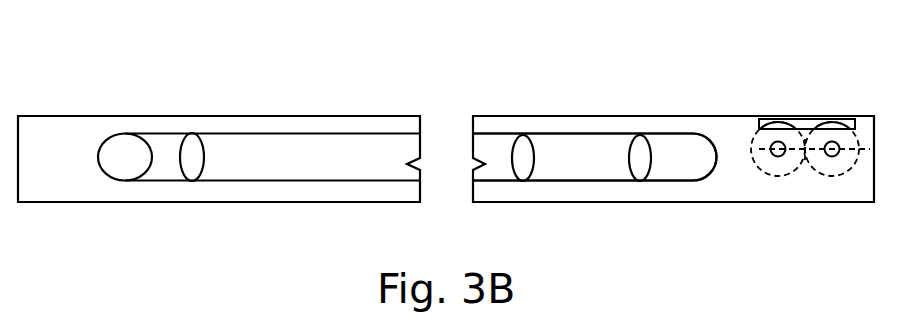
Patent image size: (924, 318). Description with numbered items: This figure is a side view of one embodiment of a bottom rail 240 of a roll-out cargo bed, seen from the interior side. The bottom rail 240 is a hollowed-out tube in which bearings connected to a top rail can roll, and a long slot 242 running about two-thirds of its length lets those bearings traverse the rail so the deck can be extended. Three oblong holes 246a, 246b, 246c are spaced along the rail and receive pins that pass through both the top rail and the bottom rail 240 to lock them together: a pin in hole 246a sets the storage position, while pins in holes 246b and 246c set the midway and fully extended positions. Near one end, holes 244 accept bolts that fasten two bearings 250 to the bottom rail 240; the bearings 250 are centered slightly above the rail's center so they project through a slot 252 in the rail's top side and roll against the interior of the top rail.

The bottom rail 240 is at (237, 88).
The slot 242 is at (568, 153).
The hole 244 is at (826, 146).
The oblong hole 246a is at (193, 167).
The oblong hole 246b is at (525, 165).
The oblong hole 246c is at (645, 153).
The bearing 250 is at (770, 173).
The slot 252 is at (826, 120).